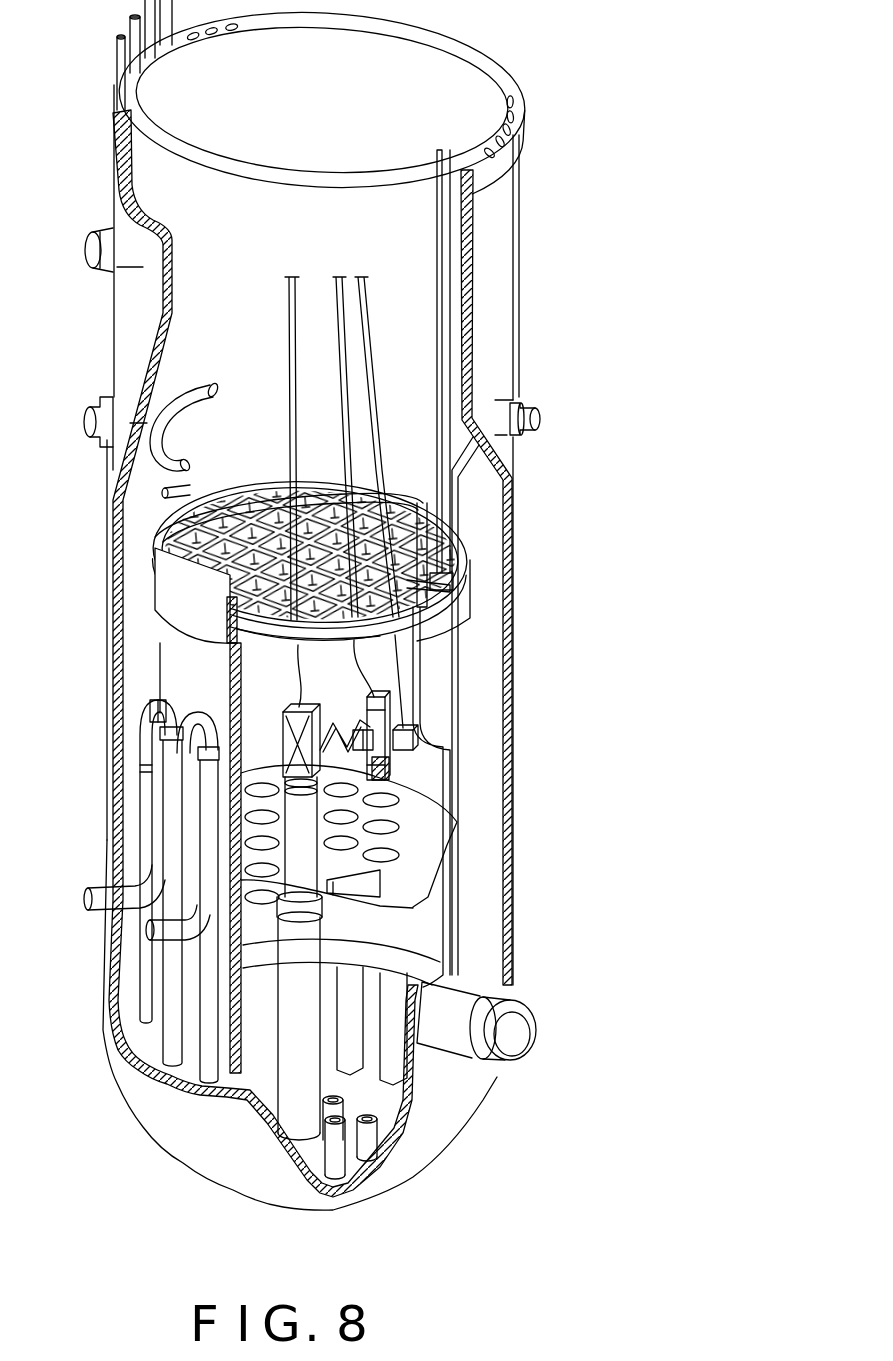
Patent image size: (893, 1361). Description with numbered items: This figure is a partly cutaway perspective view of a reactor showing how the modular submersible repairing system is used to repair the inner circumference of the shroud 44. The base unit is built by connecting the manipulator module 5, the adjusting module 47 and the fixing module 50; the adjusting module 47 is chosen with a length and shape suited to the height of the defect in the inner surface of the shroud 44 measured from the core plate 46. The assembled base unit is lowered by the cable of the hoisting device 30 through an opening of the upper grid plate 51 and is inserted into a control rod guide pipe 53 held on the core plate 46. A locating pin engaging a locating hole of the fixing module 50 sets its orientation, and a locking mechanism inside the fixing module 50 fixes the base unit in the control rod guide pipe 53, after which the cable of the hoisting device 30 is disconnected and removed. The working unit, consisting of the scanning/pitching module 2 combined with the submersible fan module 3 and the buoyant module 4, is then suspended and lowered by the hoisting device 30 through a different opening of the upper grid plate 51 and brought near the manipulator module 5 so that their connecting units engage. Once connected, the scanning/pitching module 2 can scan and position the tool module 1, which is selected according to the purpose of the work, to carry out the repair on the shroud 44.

The tool module 1 is at (413, 738).
The scanning/pitching module 2 is at (390, 701).
The submersible fan module 3 is at (390, 777).
The buoyant module 4 is at (430, 722).
The manipulator module 5 is at (282, 718).
The hoisting device 30 is at (290, 318).
The shroud 44 is at (170, 647).
The core plate 46 is at (420, 862).
The adjusting module 47 is at (318, 827).
The fixing module 50 is at (443, 933).
The upper grid plate 51 is at (158, 540).
The control rod guide pipe 53 is at (293, 1013).